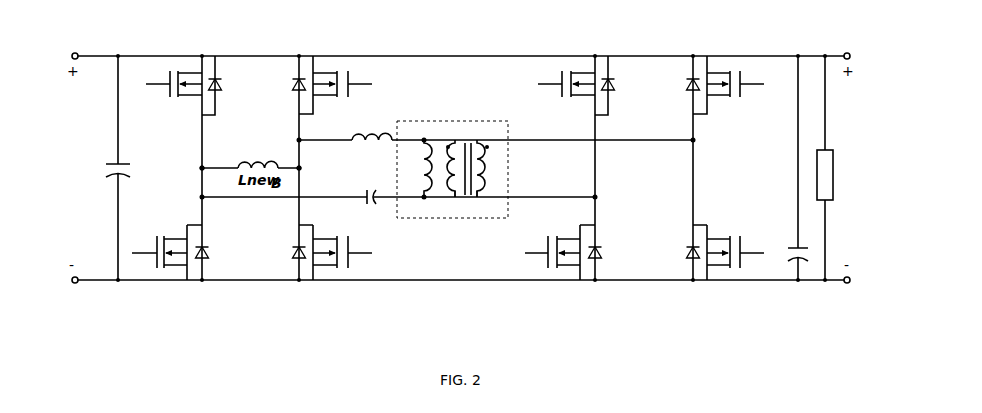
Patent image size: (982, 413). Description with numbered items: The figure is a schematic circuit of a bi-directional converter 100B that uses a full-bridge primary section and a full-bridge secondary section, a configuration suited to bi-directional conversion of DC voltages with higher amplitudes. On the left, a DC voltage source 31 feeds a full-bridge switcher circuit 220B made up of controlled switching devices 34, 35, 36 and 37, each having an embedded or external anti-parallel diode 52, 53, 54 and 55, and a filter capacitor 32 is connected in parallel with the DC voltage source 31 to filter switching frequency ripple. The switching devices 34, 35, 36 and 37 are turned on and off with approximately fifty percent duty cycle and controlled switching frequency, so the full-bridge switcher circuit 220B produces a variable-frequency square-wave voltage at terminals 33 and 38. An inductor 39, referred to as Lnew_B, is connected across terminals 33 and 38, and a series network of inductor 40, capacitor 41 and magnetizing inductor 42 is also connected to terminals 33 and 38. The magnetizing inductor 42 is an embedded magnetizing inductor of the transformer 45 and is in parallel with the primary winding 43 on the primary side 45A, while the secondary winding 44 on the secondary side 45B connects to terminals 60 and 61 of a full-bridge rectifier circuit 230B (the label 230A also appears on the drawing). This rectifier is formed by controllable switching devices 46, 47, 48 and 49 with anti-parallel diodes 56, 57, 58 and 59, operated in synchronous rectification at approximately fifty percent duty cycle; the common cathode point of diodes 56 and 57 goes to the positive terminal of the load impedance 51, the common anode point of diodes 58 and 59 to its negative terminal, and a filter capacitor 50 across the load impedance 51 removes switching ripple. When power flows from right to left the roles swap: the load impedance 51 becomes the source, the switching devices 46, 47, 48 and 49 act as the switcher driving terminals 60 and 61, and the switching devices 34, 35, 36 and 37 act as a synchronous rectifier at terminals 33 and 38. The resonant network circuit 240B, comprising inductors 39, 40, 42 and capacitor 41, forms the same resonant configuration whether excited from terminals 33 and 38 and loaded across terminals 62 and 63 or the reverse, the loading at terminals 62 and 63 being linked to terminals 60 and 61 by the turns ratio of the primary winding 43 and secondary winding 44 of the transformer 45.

The DC voltage source 31 is at (88, 64).
The filter capacitor 32 is at (121, 167).
The terminal 33 is at (199, 169).
The controlled switching device 34 is at (193, 97).
The controlled switching device 35 is at (318, 74).
The controlled switching device 36 is at (151, 255).
The controlled switching device 37 is at (319, 239).
The terminal 38 is at (301, 168).
The inductor 39 is at (261, 162).
The inductor 40 is at (376, 135).
The capacitor 41 is at (372, 206).
The magnetizing inductor 42 is at (421, 165).
The primary winding 43 is at (458, 158).
The secondary winding 44 is at (480, 178).
The transformer 45 is at (474, 120).
The primary side 45A is at (452, 200).
The secondary side 45B is at (484, 200).
The controllable switching device 46 is at (586, 97).
The controllable switching device 47 is at (575, 267).
The controllable switching device 48 is at (712, 97).
The controllable switching device 49 is at (712, 238).
The filter capacitor 50 is at (792, 246).
The load impedance 51 is at (834, 156).
The anti-parallel diode 52 is at (221, 85).
The anti-parallel diode 53 is at (293, 89).
The anti-parallel diode 54 is at (208, 250).
The anti-parallel diode 55 is at (290, 258).
The anti-parallel diode 56 is at (615, 86).
The anti-parallel diode 57 is at (687, 90).
The anti-parallel diode 58 is at (603, 255).
The anti-parallel diode 59 is at (686, 257).
The terminal 60 is at (598, 196).
The terminal 61 is at (695, 143).
The terminal 62 is at (423, 137).
The terminal 63 is at (423, 200).
The bi-directional converter 100B is at (444, 87).
The full-bridge switcher circuit 220B is at (262, 300).
The converter 230A is at (610, 27).
The full-bridge rectifier circuit 230B is at (640, 300).
The resonant network circuit 240B is at (387, 242).